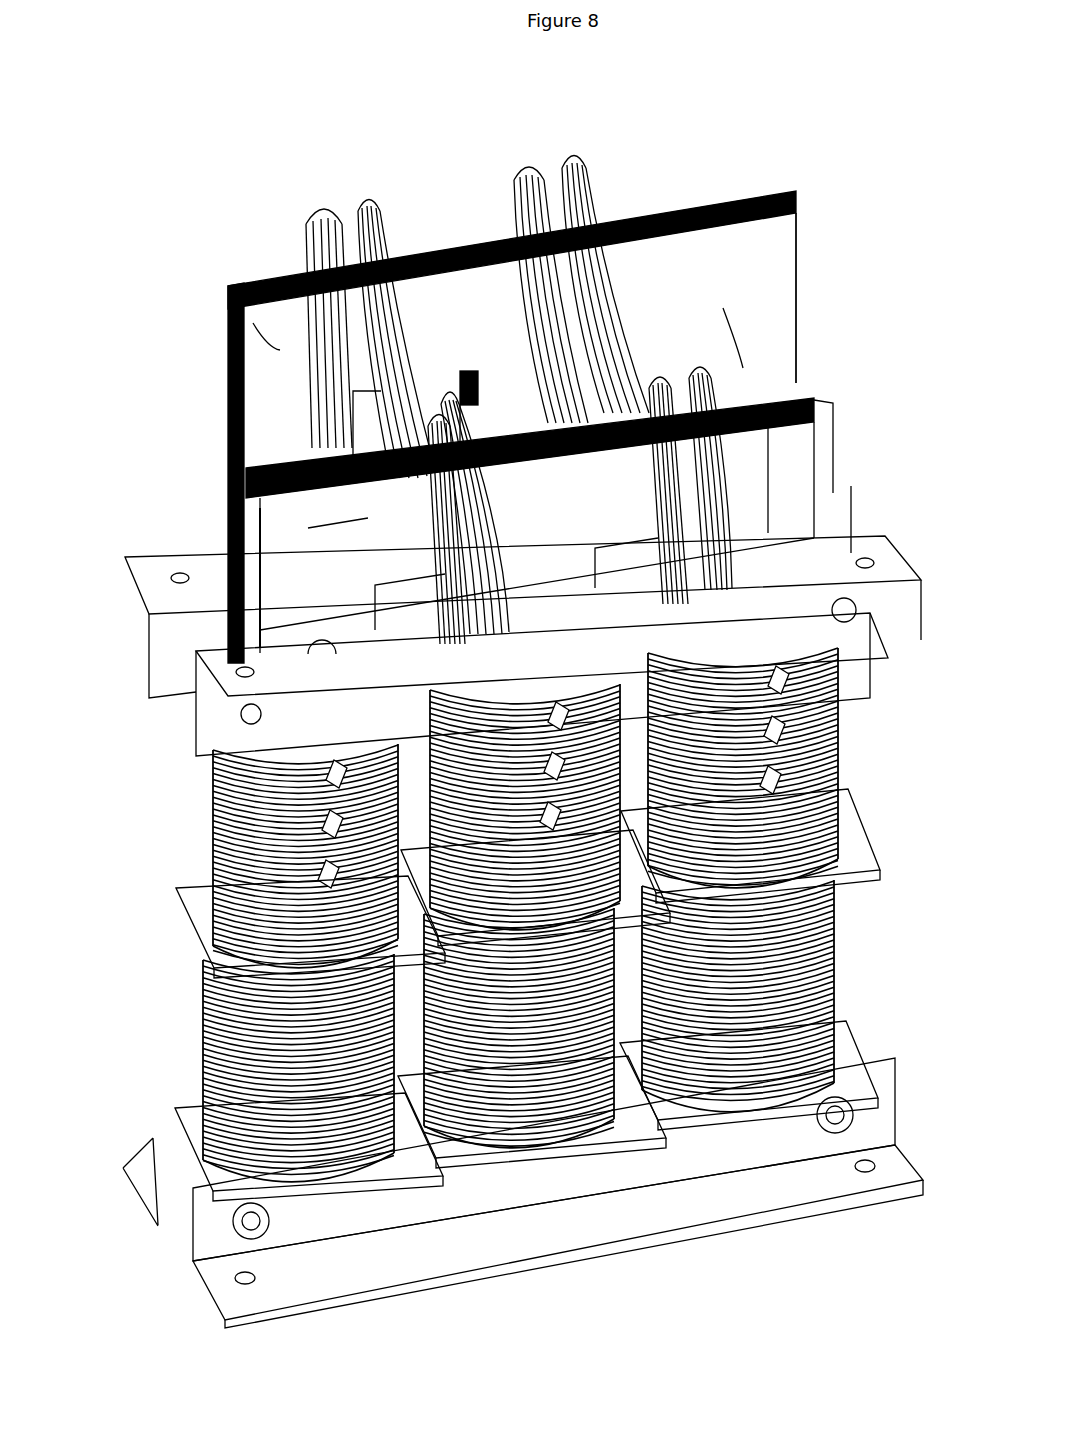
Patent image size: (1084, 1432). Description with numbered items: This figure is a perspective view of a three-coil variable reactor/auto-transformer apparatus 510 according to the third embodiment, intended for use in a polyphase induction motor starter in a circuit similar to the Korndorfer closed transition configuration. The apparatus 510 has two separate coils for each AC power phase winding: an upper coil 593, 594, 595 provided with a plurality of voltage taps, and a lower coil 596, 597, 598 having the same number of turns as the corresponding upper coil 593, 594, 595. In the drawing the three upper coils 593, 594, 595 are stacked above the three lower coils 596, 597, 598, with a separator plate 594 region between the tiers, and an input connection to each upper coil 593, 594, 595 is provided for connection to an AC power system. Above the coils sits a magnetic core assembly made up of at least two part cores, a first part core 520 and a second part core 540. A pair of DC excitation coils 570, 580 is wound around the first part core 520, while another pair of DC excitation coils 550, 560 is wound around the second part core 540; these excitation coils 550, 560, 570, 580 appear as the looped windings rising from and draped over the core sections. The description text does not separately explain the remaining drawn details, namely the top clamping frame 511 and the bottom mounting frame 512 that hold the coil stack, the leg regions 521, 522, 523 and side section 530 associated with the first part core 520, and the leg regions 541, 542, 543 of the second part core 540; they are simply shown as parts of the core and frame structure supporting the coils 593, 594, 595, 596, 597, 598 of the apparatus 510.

The variable reactor/auto-transformer apparatus 510 is at (199, 147).
The top clamping frame 511 is at (172, 545).
The bottom mounting frame 512 is at (397, 1233).
The first part core 520 is at (800, 378).
The front core left leg 521 is at (233, 600).
The front left coil clamp loop 522 is at (443, 345).
The front core right leg 523 is at (767, 527).
The core right side section 530 is at (788, 370).
The second part core 540 is at (792, 188).
The back core left leg 541 is at (220, 278).
The back core middle leg 542 is at (520, 340).
The back core right leg 543 is at (730, 313).
The DC excitation coil 550 is at (393, 240).
The DC excitation coil 560 is at (601, 178).
The DC excitation coil 570 is at (400, 530).
The DC excitation coil 580 is at (693, 467).
The upper coil 593 is at (203, 820).
The upper coil 594 is at (423, 797).
The upper coil 595 is at (832, 715).
The lower coil 596 is at (197, 990).
The lower coil 597 is at (553, 1140).
The lower coil 598 is at (753, 1100).